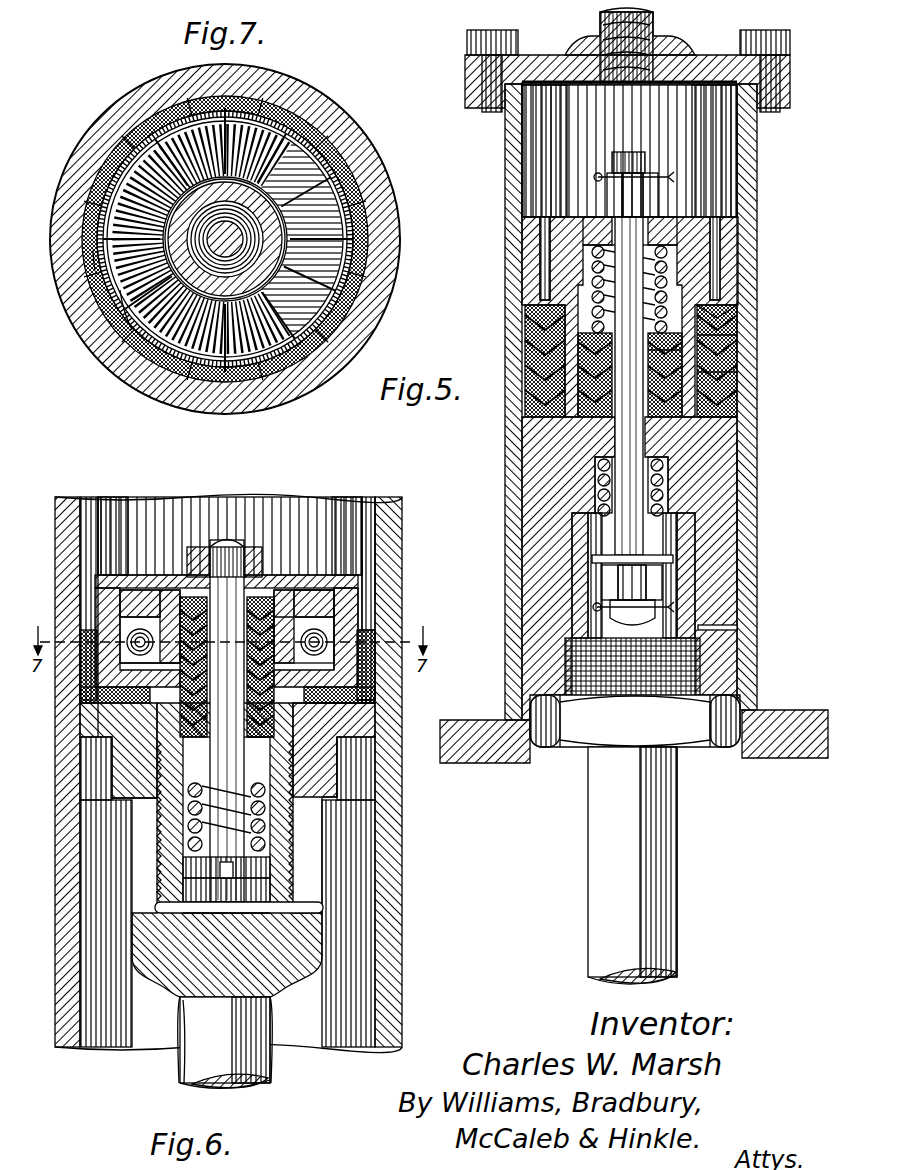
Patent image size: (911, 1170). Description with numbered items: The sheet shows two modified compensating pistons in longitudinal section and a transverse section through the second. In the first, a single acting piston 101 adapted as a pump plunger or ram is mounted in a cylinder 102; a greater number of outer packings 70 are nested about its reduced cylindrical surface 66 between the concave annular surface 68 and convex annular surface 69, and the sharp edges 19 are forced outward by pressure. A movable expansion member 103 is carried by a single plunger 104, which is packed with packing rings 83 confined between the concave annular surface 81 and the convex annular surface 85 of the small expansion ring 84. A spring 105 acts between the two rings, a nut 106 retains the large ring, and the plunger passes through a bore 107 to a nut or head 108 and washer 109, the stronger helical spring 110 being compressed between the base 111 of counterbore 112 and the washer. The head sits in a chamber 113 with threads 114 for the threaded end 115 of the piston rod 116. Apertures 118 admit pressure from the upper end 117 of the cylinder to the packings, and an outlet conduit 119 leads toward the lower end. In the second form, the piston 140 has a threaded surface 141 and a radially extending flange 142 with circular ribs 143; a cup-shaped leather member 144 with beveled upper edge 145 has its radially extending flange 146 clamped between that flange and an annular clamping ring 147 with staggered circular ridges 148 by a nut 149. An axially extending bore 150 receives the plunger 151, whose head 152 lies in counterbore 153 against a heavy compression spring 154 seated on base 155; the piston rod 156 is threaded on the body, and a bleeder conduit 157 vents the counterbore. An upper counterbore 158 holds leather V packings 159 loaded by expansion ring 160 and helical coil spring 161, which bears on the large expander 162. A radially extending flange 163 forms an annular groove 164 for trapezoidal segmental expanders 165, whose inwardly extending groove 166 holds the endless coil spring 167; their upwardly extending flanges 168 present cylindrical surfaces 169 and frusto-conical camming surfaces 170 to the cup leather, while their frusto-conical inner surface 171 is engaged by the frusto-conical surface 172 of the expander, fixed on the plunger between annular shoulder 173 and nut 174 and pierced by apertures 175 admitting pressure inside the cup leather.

In FIG. 5, the sharp edges 19 is at (726, 320).
In FIG. 5, the reduced cylindrical surface 66 is at (714, 337).
In FIG. 5, the concave annular surface 68 is at (736, 421).
In FIG. 5, the convex annular surface 69 is at (545, 332).
In FIG. 5, the outer packings 70 is at (742, 374).
In FIG. 5, the concave annular surface 81 is at (692, 432).
In FIG. 5, the packing rings 83 is at (760, 512).
In FIG. 5, the expansion ring 84 is at (690, 240).
In FIG. 5, the convex annular surface 85 is at (692, 352).
In FIG. 5, the piston 101 is at (726, 462).
In FIG. 5, the cylinder 102 is at (750, 492).
In FIG. 5, the expansion member 103 is at (712, 226).
In FIG. 5, the plunger 104 is at (566, 357).
In FIG. 5, the spring 105 is at (598, 177).
In FIG. 5, the nut 106 is at (660, 200).
In FIG. 5, the bore 107 is at (622, 436).
In FIG. 5, the nut or head 108 is at (612, 581).
In FIG. 5, the washer 109 is at (598, 558).
In FIG. 5, the helical spring 110 is at (600, 500).
In FIG. 5, the base 111 is at (606, 457).
In FIG. 5, the counterbore 112 is at (598, 477).
In FIG. 5, the chamber 113 is at (586, 600).
In FIG. 5, the threads 114 is at (570, 672).
In FIG. 5, the threaded end 115 is at (706, 666).
In FIG. 5, the piston rod 116 is at (692, 834).
In FIG. 5, the upper end of the cylinder 117 is at (557, 132).
In FIG. 5, the axially extending apertures 118 is at (545, 240).
In FIG. 5, the outlet conduit 119 is at (736, 626).
In FIG. 7, the piston 140 is at (98, 352).
In FIG. 6, the piston 140 is at (136, 762).
In FIG. 6, the threaded surface 141 is at (296, 826).
In FIG. 6, the radially extending flange 142 is at (86, 696).
In FIG. 6, the circular ribs 143 is at (150, 676).
In FIG. 7, the cup-shaped leather member 144 is at (222, 412).
In FIG. 6, the cup-shaped leather member 144 is at (358, 668).
In FIG. 6, the beveled upper edge 145 is at (378, 616).
In FIG. 6, the radially extending flange 146 is at (336, 722).
In FIG. 6, the annular clamping ring 147 is at (326, 758).
In FIG. 6, the circular ridges 148 is at (316, 776).
In FIG. 6, the nut 149 is at (300, 801).
In FIG. 6, the axially extending bore 150 is at (207, 772).
In FIG. 7, the plunger 151 is at (180, 134).
In FIG. 6, the plunger 151 is at (240, 780).
In FIG. 6, the head 152 is at (264, 868).
In FIG. 6, the counterbore 153 is at (184, 892).
In FIG. 6, the heavy compression spring 154 is at (186, 830).
In FIG. 6, the base 155 is at (278, 846).
In FIG. 6, the piston rod 156 is at (262, 1062).
In FIG. 6, the bleeder conduit 157 is at (312, 913).
In FIG. 6, the counterbore 158 is at (304, 640).
In FIG. 6, the leather V packings 159 is at (275, 715).
In FIG. 7, the expansion ring 160 is at (244, 262).
In FIG. 6, the expansion ring 160 is at (280, 590).
In FIG. 7, the helical coil spring 161 is at (338, 218).
In FIG. 6, the helical coil spring 161 is at (147, 617).
In FIG. 6, the large expander 162 is at (255, 625).
In FIG. 6, the radially extending flange 163 is at (318, 588).
In FIG. 7, the annular groove 164 is at (100, 290).
In FIG. 6, the annular groove 164 is at (150, 617).
In FIG. 7, the segmental expanders 165 is at (162, 390).
In FIG. 6, the segmental expanders 165 is at (82, 632).
In FIG. 7, the inwardly extending groove 166 is at (132, 165).
In FIG. 6, the inwardly extending groove 166 is at (326, 586).
In FIG. 7, the endless coil spring 167 is at (292, 100).
In FIG. 6, the endless coil spring 167 is at (334, 614).
In FIG. 7, the upwardly extending flanges 168 is at (330, 332).
In FIG. 6, the upwardly extending flanges 168 is at (362, 634).
In FIG. 6, the cylindrical surfaces 169 is at (346, 701).
In FIG. 6, the frusto-conical camming surfaces 170 is at (378, 560).
In FIG. 7, the frusto-conical inner surface 171 is at (345, 272).
In FIG. 6, the frusto-conical inner surface 171 is at (376, 640).
In FIG. 6, the frusto-conical surface 172 is at (377, 630).
In FIG. 6, the annular shoulder 173 is at (200, 548).
In FIG. 6, the nut 174 is at (245, 575).
In FIG. 6, the apertures 175 is at (157, 575).